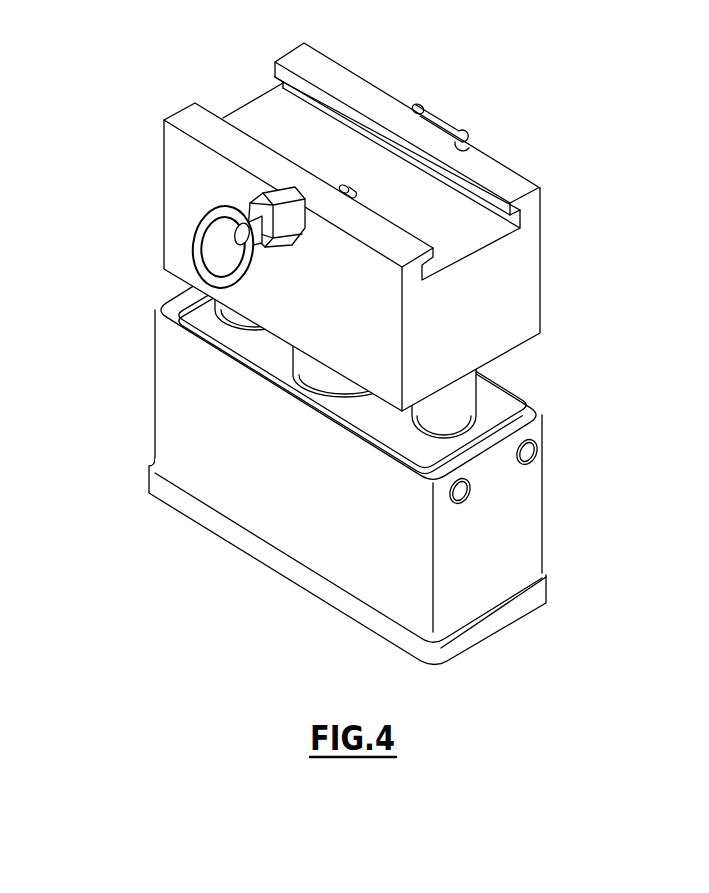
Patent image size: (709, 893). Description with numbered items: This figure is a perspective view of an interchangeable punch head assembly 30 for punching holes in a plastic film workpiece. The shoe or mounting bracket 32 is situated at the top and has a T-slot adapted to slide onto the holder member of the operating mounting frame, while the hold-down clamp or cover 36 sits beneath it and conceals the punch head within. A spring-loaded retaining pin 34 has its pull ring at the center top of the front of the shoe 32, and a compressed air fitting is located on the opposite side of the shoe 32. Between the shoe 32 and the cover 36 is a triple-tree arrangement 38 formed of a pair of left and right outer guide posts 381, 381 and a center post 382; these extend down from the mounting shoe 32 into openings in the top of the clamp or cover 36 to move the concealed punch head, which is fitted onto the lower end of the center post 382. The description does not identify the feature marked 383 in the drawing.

The punch head assembly 30 is at (369, 354).
The shoe or mounting bracket 32 is at (538, 186).
The spring-loaded retaining pin 34 is at (193, 239).
The hold-down clamp or cover 36 is at (515, 540).
The triple-tree arrangement 38 is at (334, 366).
The outer guide posts 381 is at (219, 313).
The center post 382 is at (314, 371).
The positioning groove 383 is at (262, 369).